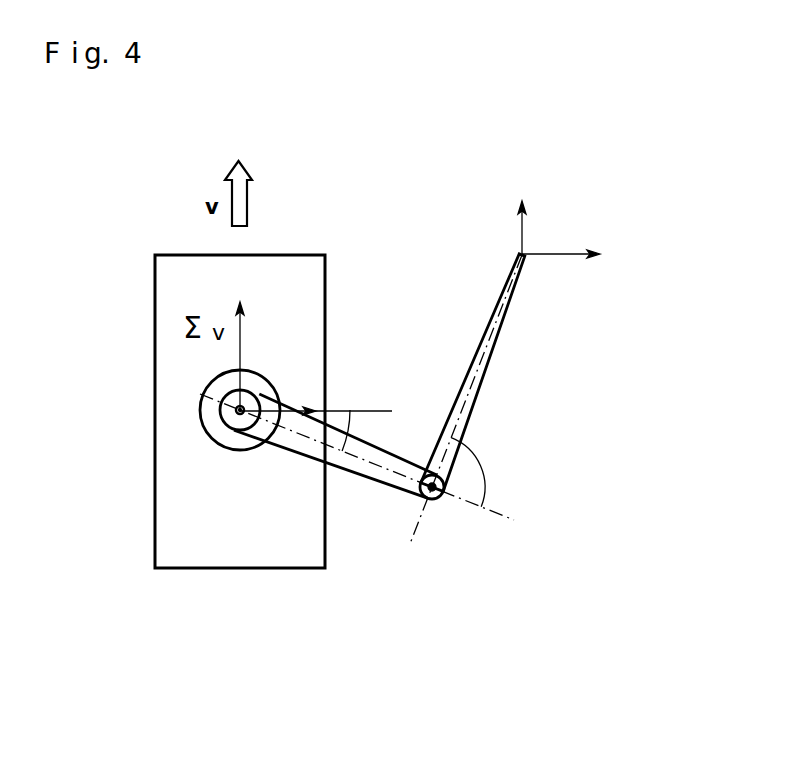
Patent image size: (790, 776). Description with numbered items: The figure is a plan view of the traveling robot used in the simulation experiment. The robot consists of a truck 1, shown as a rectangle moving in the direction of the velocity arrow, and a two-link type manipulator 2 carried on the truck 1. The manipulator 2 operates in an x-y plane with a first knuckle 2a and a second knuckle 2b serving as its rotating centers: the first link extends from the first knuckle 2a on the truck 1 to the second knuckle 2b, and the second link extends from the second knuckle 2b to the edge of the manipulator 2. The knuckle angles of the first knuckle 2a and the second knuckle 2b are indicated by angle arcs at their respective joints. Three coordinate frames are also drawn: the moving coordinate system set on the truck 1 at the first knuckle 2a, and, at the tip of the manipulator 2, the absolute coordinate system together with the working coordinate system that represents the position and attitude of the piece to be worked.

The truck 1 is at (267, 572).
The manipulator 2 is at (370, 492).
The first knuckle 2a is at (220, 418).
The second knuckle 2b is at (435, 500).